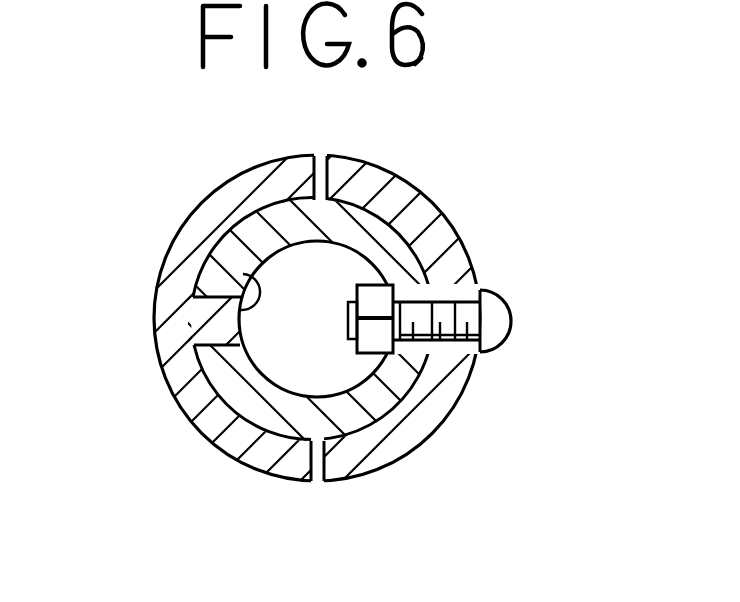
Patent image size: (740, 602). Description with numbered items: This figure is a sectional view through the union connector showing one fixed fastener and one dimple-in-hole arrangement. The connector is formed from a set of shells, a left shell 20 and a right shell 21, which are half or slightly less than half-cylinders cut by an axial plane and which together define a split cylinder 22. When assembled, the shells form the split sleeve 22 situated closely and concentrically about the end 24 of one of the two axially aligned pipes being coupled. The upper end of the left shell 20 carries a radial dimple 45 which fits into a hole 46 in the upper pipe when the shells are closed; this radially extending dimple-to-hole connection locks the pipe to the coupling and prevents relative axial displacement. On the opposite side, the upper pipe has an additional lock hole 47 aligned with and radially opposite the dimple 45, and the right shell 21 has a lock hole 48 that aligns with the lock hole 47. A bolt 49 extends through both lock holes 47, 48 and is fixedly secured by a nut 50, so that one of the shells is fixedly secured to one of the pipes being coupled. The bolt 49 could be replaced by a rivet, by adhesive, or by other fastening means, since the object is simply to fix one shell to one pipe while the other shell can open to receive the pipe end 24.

The left shell 20 is at (276, 316).
The right shell 21 is at (427, 213).
The split cylinder 22 is at (257, 483).
The end of pipe 24 is at (373, 405).
The dimple 45 is at (203, 326).
The hole 46 is at (243, 274).
The lock hole 47 is at (420, 300).
The lock hole 48 is at (466, 343).
The bolt 49 is at (497, 313).
The nut 50 is at (375, 352).